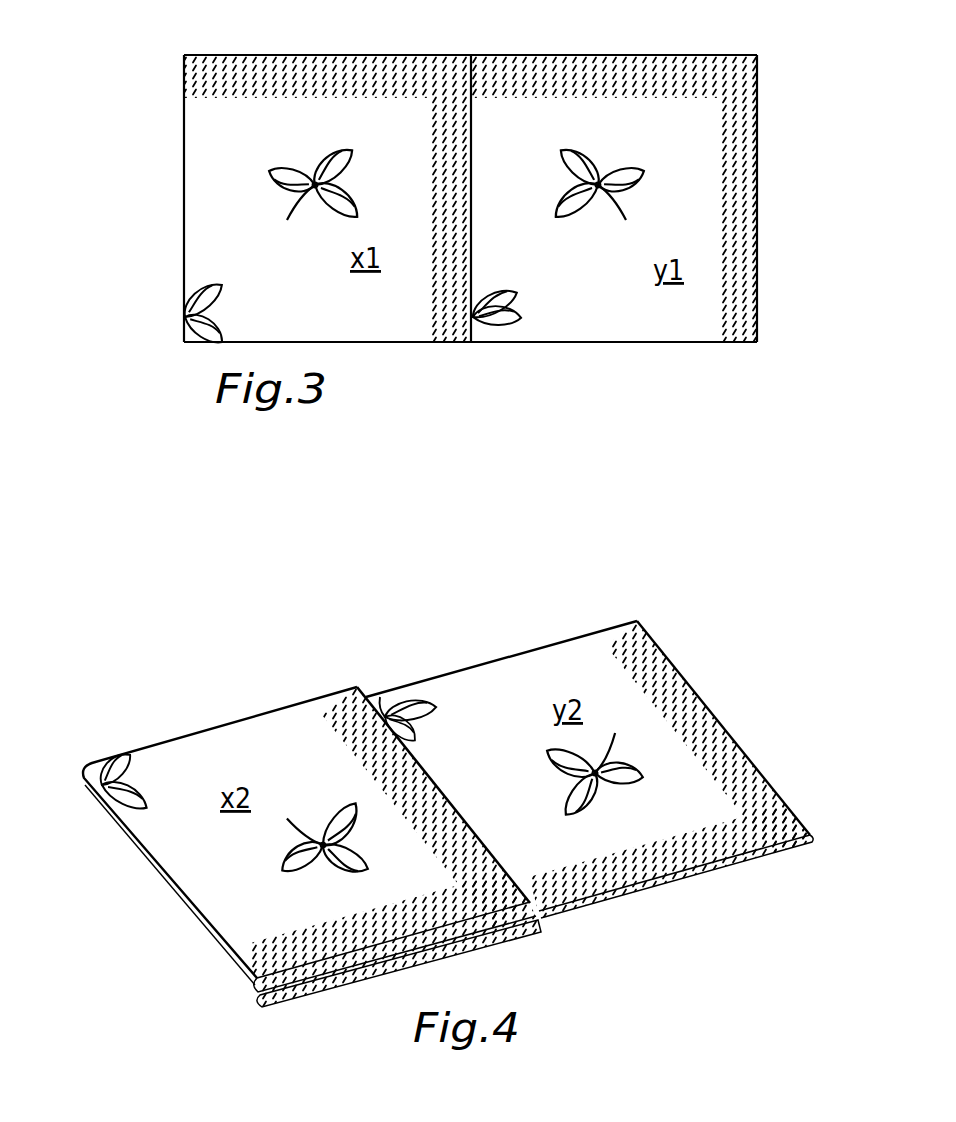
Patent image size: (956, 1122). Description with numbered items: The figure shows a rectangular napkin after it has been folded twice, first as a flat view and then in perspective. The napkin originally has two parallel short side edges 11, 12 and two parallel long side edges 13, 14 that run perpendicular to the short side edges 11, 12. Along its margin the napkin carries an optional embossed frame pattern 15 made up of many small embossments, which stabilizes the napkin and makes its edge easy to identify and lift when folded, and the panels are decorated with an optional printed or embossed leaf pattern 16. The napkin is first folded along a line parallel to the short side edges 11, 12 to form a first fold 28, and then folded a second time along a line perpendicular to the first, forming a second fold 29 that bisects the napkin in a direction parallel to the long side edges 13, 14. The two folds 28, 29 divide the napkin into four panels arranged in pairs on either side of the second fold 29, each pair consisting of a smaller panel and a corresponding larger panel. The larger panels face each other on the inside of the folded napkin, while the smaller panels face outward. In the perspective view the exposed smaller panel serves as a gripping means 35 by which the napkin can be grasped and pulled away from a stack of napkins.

In FIG. 3, the short side edge 11 is at (474, 131).
In FIG. 4, the short side edge 11 is at (455, 807).
In FIG. 3, the short side edge 12 is at (759, 286).
In FIG. 4, the short side edge 12 is at (746, 751).
In FIG. 3, the long side edge 13 is at (545, 54).
In FIG. 4, the long side edge 13 is at (620, 896).
In FIG. 3, the long side edge 14 is at (470, 76).
In FIG. 4, the long side edge 14 is at (690, 875).
In FIG. 3, the embossed frame pattern 15 is at (742, 212).
In FIG. 3, the leaf pattern 16 is at (622, 183).
In FIG. 3, the first fold 28 is at (182, 226).
In FIG. 4, the first fold 28 is at (175, 878).
In FIG. 3, the second fold 29 is at (569, 346).
In FIG. 4, the second fold 29 is at (490, 659).
In FIG. 4, the gripping means 35 is at (405, 875).